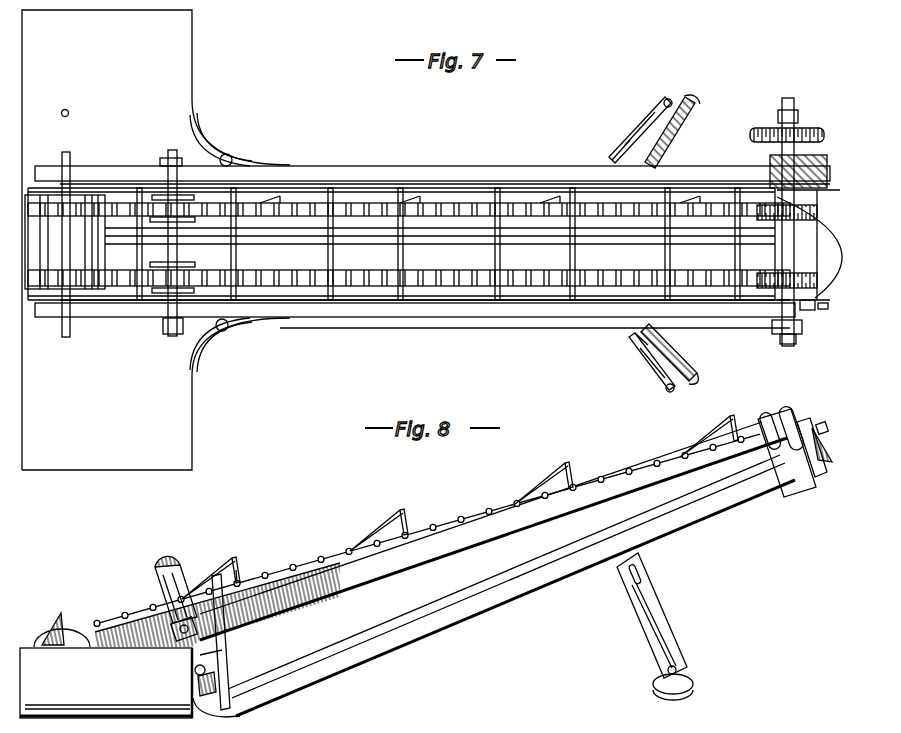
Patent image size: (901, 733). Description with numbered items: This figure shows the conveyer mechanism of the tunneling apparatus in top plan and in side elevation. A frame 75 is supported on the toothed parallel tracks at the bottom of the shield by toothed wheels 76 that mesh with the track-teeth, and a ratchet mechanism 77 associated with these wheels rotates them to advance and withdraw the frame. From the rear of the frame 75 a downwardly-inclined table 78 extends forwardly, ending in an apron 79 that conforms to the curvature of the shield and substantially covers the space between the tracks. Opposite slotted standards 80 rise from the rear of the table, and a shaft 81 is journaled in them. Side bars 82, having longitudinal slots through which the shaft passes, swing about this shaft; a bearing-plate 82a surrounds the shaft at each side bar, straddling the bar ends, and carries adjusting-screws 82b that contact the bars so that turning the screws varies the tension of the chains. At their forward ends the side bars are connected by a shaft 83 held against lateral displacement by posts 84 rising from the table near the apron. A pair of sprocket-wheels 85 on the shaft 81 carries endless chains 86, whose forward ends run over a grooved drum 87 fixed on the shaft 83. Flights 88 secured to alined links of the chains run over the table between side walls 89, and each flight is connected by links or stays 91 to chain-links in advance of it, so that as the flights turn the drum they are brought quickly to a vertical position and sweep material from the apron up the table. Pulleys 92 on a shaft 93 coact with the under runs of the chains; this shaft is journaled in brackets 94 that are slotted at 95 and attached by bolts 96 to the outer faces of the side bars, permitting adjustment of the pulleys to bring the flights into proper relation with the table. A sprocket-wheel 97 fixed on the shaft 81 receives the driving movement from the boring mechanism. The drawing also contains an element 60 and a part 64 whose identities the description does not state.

In FIG. 8, the shaft end 60 is at (788, 421).
In FIG. 8, the hopper box 64 is at (106, 683).
In FIG. 7, the frame 75 is at (637, 338).
In FIG. 8, the frame 75 is at (658, 591).
In FIG. 7, the toothed wheels 76 is at (696, 106).
In FIG. 8, the toothed wheels 76 is at (692, 684).
In FIG. 7, the ratchet mechanism 77 is at (664, 104).
In FIG. 8, the ratchet mechanism 77 is at (664, 672).
In FIG. 7, the table 78 is at (453, 167).
In FIG. 8, the table 78 is at (552, 585).
In FIG. 7, the apron 79 is at (156, 240).
In FIG. 7, the slotted standards 80 is at (778, 164).
In FIG. 8, the slotted standards 80 is at (762, 424).
In FIG. 7, the shaft 81 is at (790, 344).
In FIG. 8, the shaft 81 is at (772, 451).
In FIG. 7, the side bars 82 is at (499, 173).
In FIG. 8, the side bars 82 is at (441, 534).
In FIG. 7, the bearing-plate 82a is at (803, 328).
In FIG. 7, the adjusting-screws 82b is at (828, 308).
In FIG. 8, the adjusting-screws 82b is at (828, 428).
In FIG. 7, the shaft 83 is at (76, 257).
In FIG. 7, the posts 84 is at (228, 156).
In FIG. 8, the posts 84 is at (232, 713).
In FIG. 7, the sprocket-wheels 85 is at (820, 217).
In FIG. 7, the chains 86 is at (528, 208).
In FIG. 8, the chains 86 is at (485, 507).
In FIG. 7, the grooved drum 87 is at (65, 242).
In FIG. 7, the flights 88 is at (400, 190).
In FIG. 8, the flights 88 is at (238, 571).
In FIG. 7, the side walls 89 is at (506, 295).
In FIG. 8, the side walls 89 is at (437, 612).
In FIG. 7, the links or stays 91 is at (548, 207).
In FIG. 8, the links or stays 91 is at (560, 490).
In FIG. 7, the pulleys 92 is at (168, 194).
In FIG. 8, the pulleys 92 is at (214, 657).
In FIG. 7, the shaft 93 is at (172, 334).
In FIG. 8, the shaft 93 is at (206, 672).
In FIG. 8, the brackets 94 is at (163, 586).
In FIG. 7, the slot 95 is at (162, 166).
In FIG. 8, the slot 95 is at (167, 562).
In FIG. 7, the bolts 96 is at (174, 164).
In FIG. 8, the bolts 96 is at (178, 645).
In FIG. 7, the sprocket-wheel 97 is at (822, 134).
In FIG. 8, the sprocket-wheel 97 is at (44, 642).